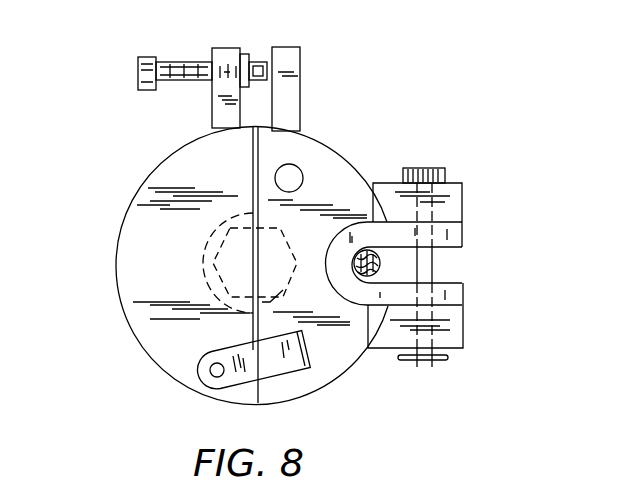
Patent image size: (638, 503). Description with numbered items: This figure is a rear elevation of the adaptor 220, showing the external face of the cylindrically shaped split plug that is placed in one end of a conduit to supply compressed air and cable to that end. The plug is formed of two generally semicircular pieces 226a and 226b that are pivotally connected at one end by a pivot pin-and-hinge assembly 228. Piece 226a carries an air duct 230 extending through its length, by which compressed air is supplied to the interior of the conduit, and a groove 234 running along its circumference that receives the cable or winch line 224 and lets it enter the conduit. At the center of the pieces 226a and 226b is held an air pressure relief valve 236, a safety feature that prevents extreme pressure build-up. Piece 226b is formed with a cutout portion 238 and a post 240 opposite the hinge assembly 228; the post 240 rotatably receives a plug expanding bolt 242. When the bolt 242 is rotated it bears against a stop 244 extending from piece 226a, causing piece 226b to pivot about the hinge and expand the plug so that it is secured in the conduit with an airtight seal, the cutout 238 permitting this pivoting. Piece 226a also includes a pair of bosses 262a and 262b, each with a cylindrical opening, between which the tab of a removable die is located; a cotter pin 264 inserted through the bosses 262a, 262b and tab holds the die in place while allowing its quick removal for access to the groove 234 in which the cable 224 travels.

The adaptor 220 is at (397, 93).
The cable or winch line 224 is at (357, 256).
The split plug piece 226a is at (320, 377).
The split plug piece 226b is at (163, 363).
The pivot pin-and-hinge assembly 228 is at (215, 378).
The air duct 230 is at (295, 164).
The groove 234 is at (372, 282).
The air pressure relief valve 236 is at (286, 280).
The cutout portion 238 is at (236, 392).
The post 240 is at (222, 49).
The plug expanding bolt 242 is at (142, 60).
The stop 244 is at (290, 48).
The boss 262a is at (453, 193).
The boss 262b is at (457, 318).
The cotter pin 264 is at (435, 176).